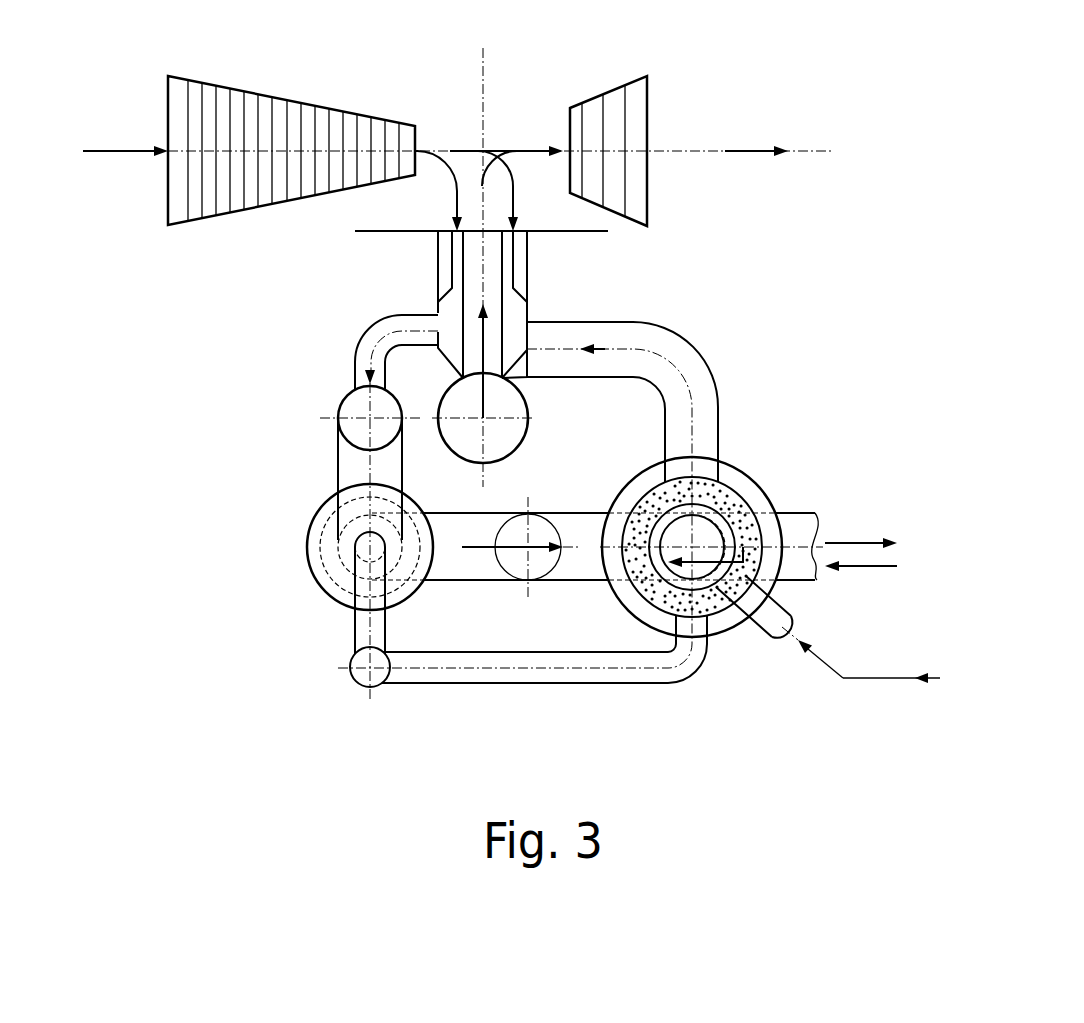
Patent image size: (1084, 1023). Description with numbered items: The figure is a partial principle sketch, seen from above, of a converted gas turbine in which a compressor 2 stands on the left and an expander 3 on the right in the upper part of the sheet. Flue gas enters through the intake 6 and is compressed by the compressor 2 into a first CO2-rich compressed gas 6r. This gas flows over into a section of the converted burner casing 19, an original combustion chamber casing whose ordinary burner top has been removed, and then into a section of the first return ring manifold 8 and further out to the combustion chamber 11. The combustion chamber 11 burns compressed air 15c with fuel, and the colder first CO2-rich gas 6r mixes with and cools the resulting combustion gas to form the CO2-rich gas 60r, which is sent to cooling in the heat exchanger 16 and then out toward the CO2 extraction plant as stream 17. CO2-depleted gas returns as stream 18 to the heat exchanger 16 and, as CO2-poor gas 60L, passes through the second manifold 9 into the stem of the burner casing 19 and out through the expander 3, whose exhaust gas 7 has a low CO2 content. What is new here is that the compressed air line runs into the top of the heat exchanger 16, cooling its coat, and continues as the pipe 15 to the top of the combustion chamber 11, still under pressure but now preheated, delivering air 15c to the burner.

The compressor 2 is at (300, 102).
The expander 3 is at (605, 95).
The intake 6 is at (111, 152).
The first CO2-rich compressed gas 6r is at (445, 172).
The exhaust gas 7 is at (787, 152).
The first return ring manifold 8 is at (360, 417).
The second manifold 9 is at (483, 418).
The combustion chamber 11 is at (348, 528).
The compressed air pipe 15 is at (538, 683).
The compressed air 15c is at (830, 629).
The heat exchanger 16 is at (753, 480).
The CO2-rich gas to carbon capture 17 is at (880, 543).
The CO2-depleted gas from carbon capture 18 is at (801, 563).
The burner casing 19 is at (527, 273).
The CO2-poor exhaust gas 60L is at (670, 367).
The CO2-rich gas 60r is at (573, 546).